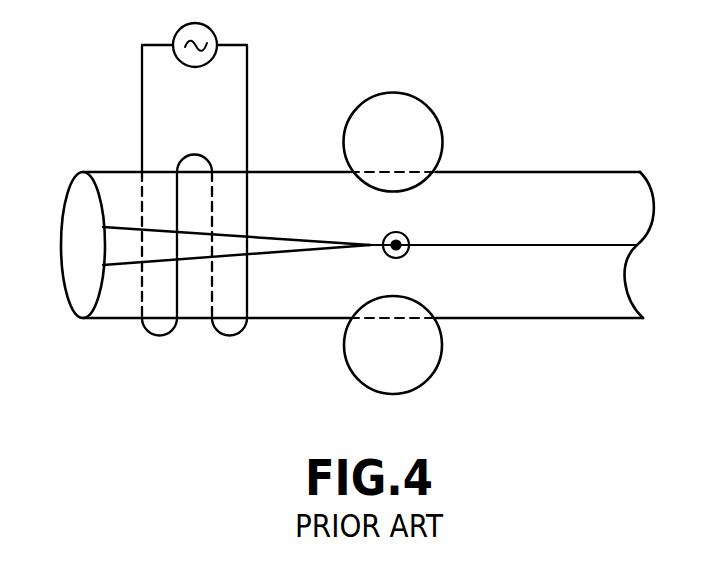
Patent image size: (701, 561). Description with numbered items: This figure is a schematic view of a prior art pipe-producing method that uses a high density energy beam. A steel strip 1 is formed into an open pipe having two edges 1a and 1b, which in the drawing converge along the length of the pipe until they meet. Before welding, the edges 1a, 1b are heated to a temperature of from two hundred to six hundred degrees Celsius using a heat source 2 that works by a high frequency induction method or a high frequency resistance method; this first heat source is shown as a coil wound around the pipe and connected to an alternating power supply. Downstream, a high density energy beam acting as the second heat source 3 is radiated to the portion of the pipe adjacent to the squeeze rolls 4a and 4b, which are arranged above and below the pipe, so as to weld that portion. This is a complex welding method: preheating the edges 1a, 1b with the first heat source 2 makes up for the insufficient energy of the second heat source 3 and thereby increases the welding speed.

The steel strip 1 is at (570, 172).
The edge 1a is at (280, 240).
The edge 1b is at (277, 253).
The heat source 2 is at (248, 86).
The second heat source 3 is at (411, 237).
The squeeze roll 4a is at (403, 93).
The squeeze roll 4b is at (428, 383).